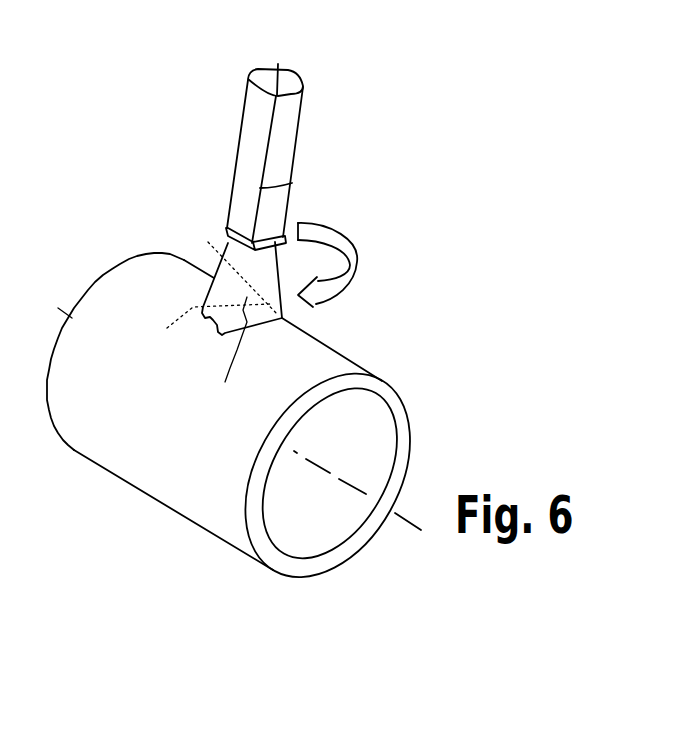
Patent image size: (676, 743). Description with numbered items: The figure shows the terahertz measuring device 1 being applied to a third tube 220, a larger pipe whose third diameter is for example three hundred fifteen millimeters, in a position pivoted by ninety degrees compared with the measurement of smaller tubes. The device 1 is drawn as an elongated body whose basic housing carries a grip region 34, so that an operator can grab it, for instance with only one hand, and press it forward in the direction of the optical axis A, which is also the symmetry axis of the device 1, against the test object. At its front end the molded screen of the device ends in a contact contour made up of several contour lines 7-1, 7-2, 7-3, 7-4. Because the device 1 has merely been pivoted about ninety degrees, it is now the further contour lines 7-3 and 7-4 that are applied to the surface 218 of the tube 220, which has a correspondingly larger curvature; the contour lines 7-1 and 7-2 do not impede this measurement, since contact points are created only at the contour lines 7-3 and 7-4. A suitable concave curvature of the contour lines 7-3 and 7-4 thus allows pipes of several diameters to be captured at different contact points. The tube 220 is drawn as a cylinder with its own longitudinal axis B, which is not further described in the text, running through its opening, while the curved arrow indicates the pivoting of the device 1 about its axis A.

The terahertz measuring device 1 is at (238, 245).
The grip region 34 is at (287, 145).
The contour line 7-1 is at (211, 320).
The contour line 7-2 is at (219, 260).
The contour line 7-3 is at (221, 359).
The contour line 7-4 is at (191, 328).
The surface 218 is at (335, 358).
The third tube 220 is at (407, 410).
The optical axis A is at (278, 68).
The workpiece axis B is at (403, 524).